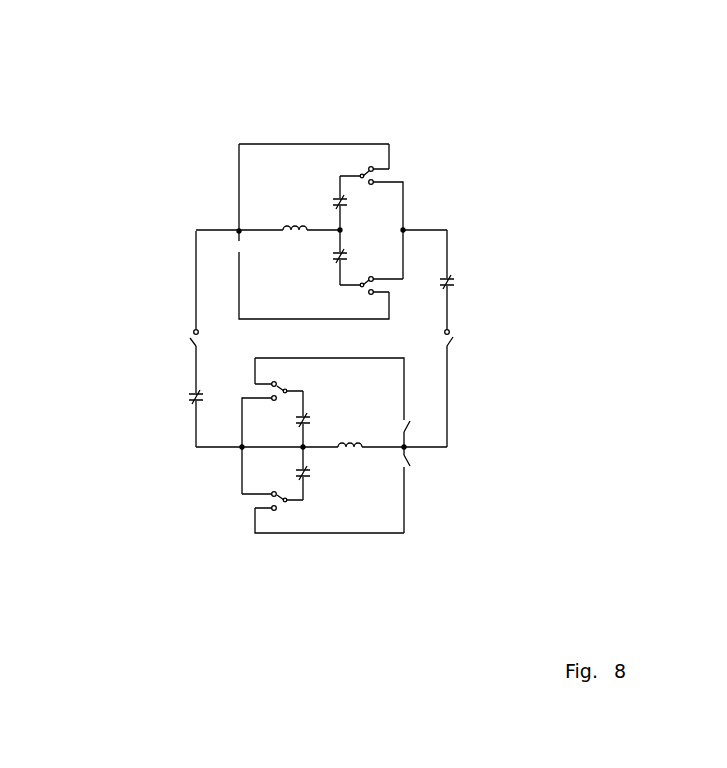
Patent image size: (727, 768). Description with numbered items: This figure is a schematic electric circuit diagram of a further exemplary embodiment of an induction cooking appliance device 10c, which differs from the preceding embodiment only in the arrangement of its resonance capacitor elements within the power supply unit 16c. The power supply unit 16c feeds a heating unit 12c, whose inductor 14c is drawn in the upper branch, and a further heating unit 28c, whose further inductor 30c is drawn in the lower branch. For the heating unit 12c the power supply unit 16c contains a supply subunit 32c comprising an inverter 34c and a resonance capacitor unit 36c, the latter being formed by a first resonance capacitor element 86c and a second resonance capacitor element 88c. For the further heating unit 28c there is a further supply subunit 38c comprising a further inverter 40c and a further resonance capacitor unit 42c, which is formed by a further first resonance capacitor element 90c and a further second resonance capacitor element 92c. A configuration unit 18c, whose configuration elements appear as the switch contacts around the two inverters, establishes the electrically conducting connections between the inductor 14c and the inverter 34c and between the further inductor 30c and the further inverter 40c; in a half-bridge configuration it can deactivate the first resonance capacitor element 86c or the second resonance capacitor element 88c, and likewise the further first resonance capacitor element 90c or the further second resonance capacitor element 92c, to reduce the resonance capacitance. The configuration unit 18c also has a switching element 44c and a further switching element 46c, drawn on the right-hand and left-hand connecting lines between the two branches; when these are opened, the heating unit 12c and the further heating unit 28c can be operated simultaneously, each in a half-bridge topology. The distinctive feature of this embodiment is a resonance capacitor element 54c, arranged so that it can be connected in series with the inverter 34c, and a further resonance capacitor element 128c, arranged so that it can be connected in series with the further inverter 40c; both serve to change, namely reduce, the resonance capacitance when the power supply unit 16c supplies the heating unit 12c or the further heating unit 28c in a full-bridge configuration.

The induction cooking appliance device 10c is at (181, 66).
The heating unit 12c is at (280, 97).
The inductor 14c is at (297, 222).
The power supply unit 16c is at (199, 156).
The configuration unit 18c is at (488, 412).
The further heating unit 28c is at (452, 527).
The further inductor 30c is at (350, 448).
The supply subunit 32c is at (49, 221).
The inverter 34c is at (229, 244).
The resonance capacitor unit 36c is at (122, 310).
The further supply subunit 38c is at (542, 466).
The further inverter 40c is at (412, 424).
The further resonance capacitor unit 42c is at (394, 615).
The switching element 44c is at (449, 341).
The further switching element 46c is at (191, 334).
The resonance capacitor element 54c is at (453, 287).
The first resonance capacitor element 86c is at (339, 212).
The second resonance capacitor element 88c is at (339, 262).
The further first resonance capacitor element 90c is at (307, 424).
The further second resonance capacitor element 92c is at (307, 477).
The further resonance capacitor element 128c is at (191, 403).